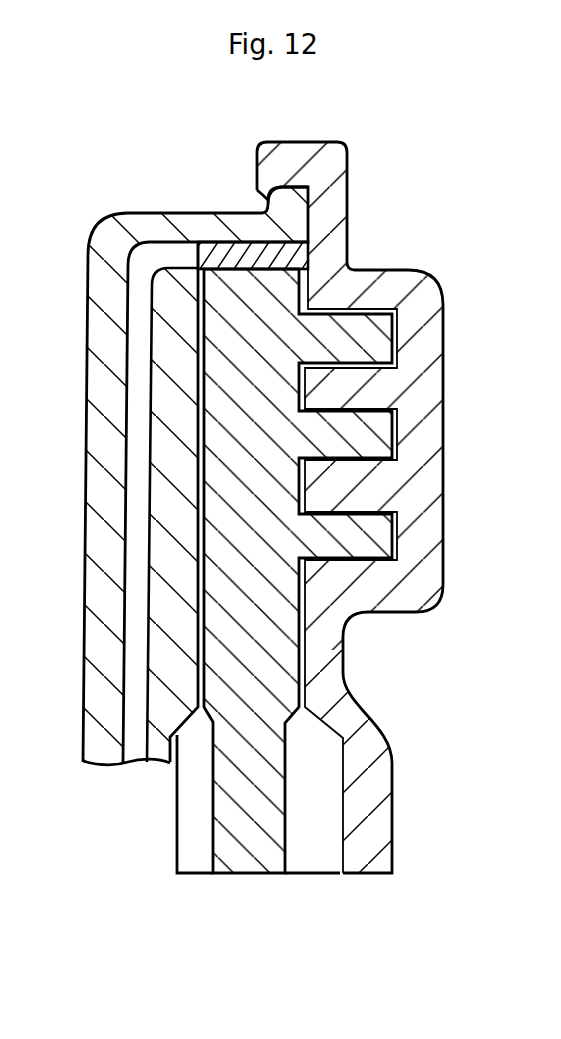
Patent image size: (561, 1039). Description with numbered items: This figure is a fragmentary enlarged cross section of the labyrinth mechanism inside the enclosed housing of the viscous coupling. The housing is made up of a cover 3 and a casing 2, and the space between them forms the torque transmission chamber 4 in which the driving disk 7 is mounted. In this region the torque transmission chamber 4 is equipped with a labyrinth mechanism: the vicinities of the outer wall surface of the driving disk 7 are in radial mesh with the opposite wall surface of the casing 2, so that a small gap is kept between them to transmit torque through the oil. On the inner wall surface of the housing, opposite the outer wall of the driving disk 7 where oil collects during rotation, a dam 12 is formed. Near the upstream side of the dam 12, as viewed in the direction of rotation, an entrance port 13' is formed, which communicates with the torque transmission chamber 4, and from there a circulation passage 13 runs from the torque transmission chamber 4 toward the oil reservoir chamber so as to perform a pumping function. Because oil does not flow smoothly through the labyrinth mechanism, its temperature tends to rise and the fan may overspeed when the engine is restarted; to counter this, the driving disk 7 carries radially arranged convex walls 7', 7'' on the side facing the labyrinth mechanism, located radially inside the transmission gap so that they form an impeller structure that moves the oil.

The casing 2 is at (428, 422).
The cover 3 is at (107, 540).
The torque transmission chamber 4 is at (300, 492).
The driving disk 7 is at (317, 571).
The convex wall 7' is at (358, 798).
The convex wall 7'' is at (156, 804).
The dam 12 is at (300, 255).
The circulation passage 13 is at (112, 515).
The entrance port 13' is at (114, 502).